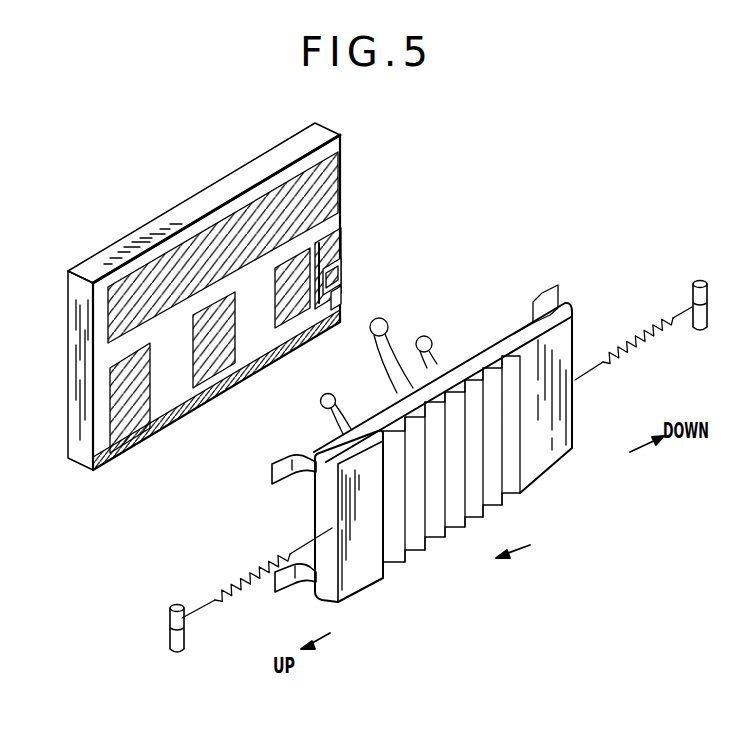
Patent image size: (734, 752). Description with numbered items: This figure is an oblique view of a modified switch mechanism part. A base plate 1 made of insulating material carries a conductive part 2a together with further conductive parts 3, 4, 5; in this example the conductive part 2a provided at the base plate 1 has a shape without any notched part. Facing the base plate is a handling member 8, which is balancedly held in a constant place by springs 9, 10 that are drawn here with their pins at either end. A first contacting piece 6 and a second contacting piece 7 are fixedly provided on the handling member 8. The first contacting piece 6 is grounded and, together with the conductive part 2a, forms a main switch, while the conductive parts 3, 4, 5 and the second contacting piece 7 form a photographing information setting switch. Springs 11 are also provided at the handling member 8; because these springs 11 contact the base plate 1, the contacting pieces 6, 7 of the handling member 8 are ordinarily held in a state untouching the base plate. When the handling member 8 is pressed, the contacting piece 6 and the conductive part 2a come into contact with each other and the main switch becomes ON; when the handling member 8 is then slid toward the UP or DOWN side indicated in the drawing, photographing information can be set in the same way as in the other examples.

The base plate 1 is at (296, 150).
The conductive part 2a is at (330, 190).
The conductive part 3 is at (340, 250).
The conductive part 4 is at (342, 282).
The conductive part 5 is at (343, 312).
The first contacting piece 6 is at (392, 328).
The second contacting piece 7 is at (429, 345).
The handling member 8 is at (567, 452).
The spring 9 is at (643, 330).
The spring 10 is at (222, 583).
The springs 11 is at (292, 562).